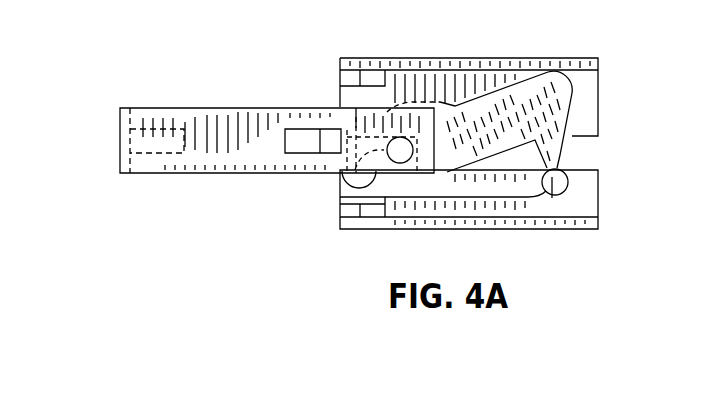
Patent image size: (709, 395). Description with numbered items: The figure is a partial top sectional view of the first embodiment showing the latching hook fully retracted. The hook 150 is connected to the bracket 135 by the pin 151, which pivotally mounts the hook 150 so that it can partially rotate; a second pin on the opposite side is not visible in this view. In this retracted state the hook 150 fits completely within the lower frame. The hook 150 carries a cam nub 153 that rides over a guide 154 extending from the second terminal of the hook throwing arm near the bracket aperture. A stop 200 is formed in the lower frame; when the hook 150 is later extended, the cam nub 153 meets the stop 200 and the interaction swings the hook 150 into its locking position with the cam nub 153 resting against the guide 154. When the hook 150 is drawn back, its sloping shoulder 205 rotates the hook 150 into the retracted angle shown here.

The bracket 135 is at (228, 118).
The hook 150 is at (538, 92).
The pin 151 is at (401, 148).
The cam nub 153 is at (372, 172).
The guide 154 is at (336, 201).
The stop 200 is at (547, 210).
The sloping shoulder 205 is at (447, 172).